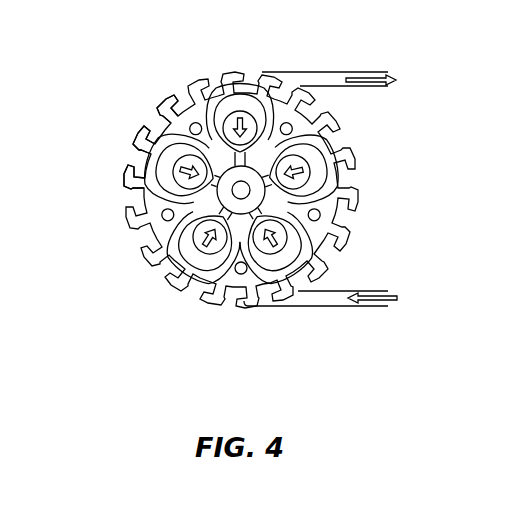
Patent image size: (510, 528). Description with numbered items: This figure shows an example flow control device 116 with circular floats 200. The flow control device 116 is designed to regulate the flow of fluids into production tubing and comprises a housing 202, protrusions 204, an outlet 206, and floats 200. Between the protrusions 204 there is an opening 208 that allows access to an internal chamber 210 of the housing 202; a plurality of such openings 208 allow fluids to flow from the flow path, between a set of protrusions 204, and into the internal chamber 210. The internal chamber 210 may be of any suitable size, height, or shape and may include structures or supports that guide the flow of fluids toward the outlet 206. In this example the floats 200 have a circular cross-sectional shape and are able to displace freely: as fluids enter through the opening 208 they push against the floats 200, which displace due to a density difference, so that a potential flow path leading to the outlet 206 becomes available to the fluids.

The flow control device 116 is at (236, 194).
The floats 200 is at (240, 116).
The housing 202 is at (163, 122).
The protrusions 204 is at (170, 102).
The outlet 206 is at (250, 190).
The opening 208 is at (275, 297).
The internal chamber 210 is at (152, 164).